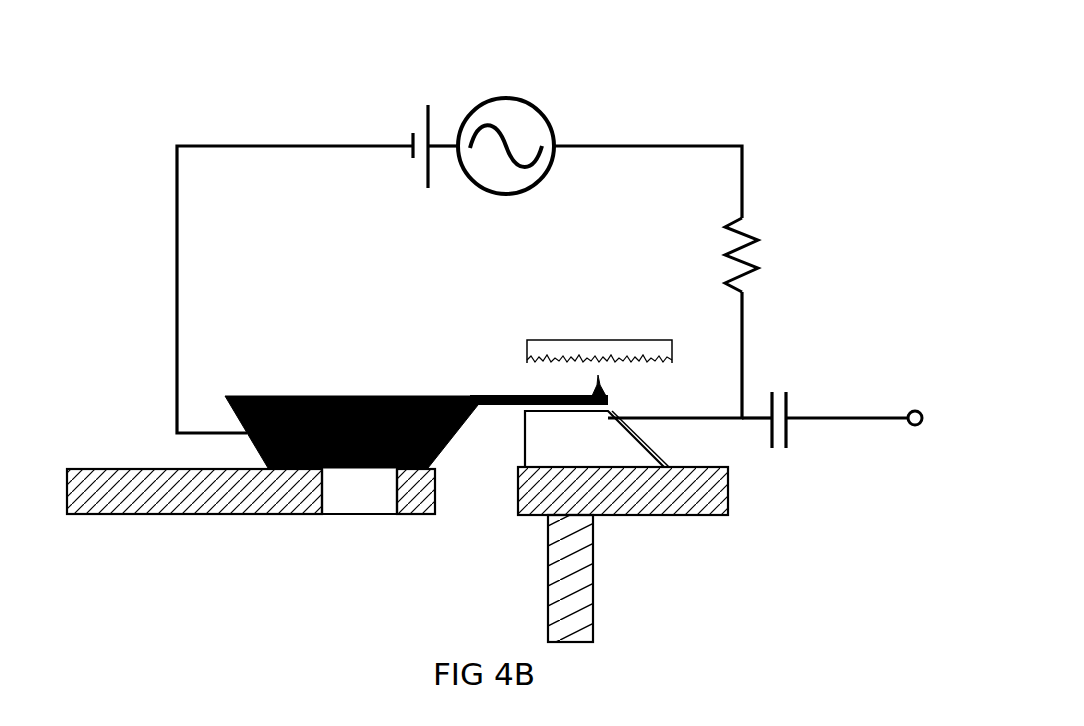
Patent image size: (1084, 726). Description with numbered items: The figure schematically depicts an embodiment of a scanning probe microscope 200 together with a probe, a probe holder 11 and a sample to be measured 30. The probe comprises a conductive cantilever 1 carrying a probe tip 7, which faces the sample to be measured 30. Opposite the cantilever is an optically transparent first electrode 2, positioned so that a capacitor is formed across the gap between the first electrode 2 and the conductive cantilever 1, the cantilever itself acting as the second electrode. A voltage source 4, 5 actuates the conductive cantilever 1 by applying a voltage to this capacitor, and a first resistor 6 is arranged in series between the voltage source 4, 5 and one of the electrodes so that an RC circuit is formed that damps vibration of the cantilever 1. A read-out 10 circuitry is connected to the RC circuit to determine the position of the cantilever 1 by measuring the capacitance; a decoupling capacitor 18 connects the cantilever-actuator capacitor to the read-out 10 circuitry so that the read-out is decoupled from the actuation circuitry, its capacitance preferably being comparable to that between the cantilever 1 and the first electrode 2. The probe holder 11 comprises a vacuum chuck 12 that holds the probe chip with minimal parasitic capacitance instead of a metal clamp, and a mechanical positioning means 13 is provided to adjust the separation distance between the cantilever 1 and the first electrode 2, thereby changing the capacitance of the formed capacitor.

The scanning probe microscope 200 is at (152, 100).
The voltage source 4 is at (410, 119).
The voltage source 5 is at (548, 106).
The first resistor 6 is at (756, 255).
The decoupling capacitor 18 is at (776, 452).
The electronic read-out means 10 is at (933, 471).
The conductive cantilever 1 is at (488, 396).
The probe tip 7 is at (607, 388).
The sample to be measured 30 is at (656, 348).
The first electrode 2 is at (632, 450).
The probe holder 11 is at (87, 492).
The vacuum chuck 12 is at (338, 492).
The mechanical positioning means 13 is at (579, 603).